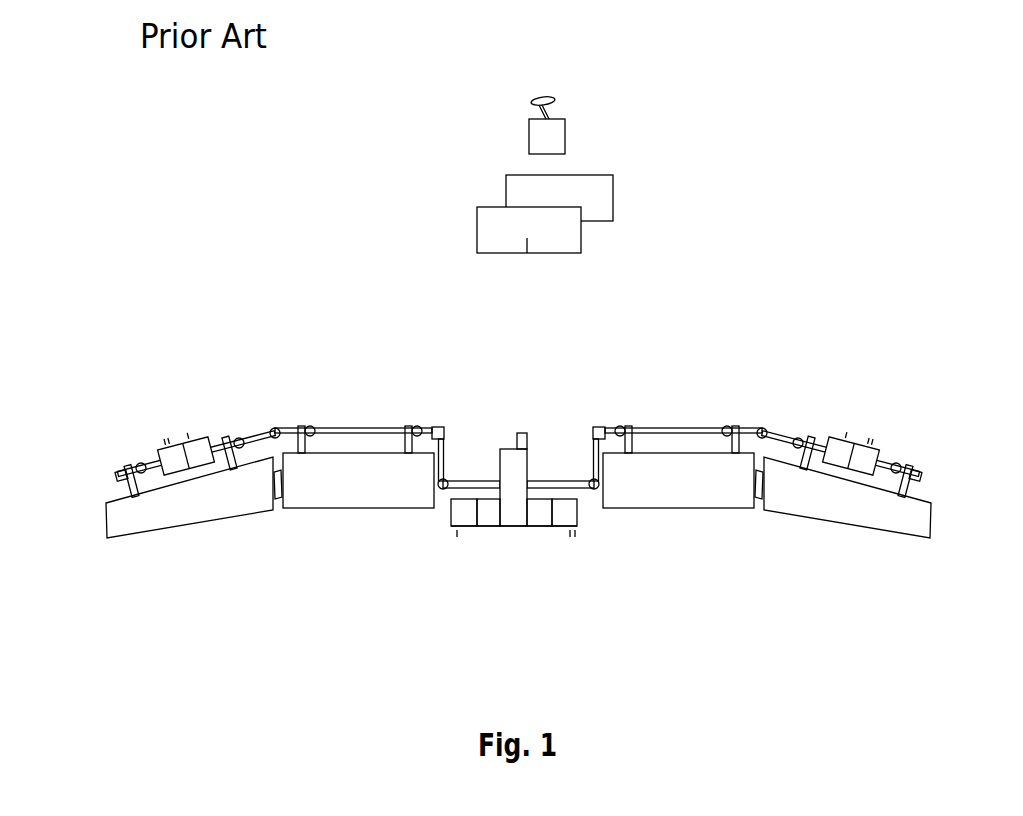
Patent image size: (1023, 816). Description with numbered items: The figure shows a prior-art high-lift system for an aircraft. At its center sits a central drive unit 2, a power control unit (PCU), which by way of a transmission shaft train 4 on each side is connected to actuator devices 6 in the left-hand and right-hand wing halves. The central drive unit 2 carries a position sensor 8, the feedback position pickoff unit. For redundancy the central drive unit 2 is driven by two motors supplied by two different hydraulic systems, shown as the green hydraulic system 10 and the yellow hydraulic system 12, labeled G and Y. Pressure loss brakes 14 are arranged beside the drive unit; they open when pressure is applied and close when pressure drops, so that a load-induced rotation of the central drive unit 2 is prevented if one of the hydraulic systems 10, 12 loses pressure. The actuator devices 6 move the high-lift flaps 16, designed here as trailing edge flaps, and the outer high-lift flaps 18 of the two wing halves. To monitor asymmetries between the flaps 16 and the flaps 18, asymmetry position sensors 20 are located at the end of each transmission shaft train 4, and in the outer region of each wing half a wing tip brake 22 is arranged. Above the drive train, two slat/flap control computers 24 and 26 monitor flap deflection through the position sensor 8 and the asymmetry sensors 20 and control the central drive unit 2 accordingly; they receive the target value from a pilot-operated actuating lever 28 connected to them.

The central drive unit 2 is at (518, 527).
The transmission shaft train 4 is at (473, 481).
The actuator device 6 is at (141, 462).
The position sensor 8 is at (520, 433).
The green hydraulic system 10 is at (453, 527).
The yellow hydraulic system 12 is at (577, 513).
The pressure loss brake 14 is at (488, 527).
The high-lift flap 16 is at (353, 500).
The high-lift flap 18 is at (192, 512).
The asymmetry position sensor 20 is at (116, 476).
The wing tip brake 22 is at (181, 428).
The control computer 24 is at (511, 255).
The control computer 26 is at (587, 175).
The actuating lever 28 is at (560, 137).